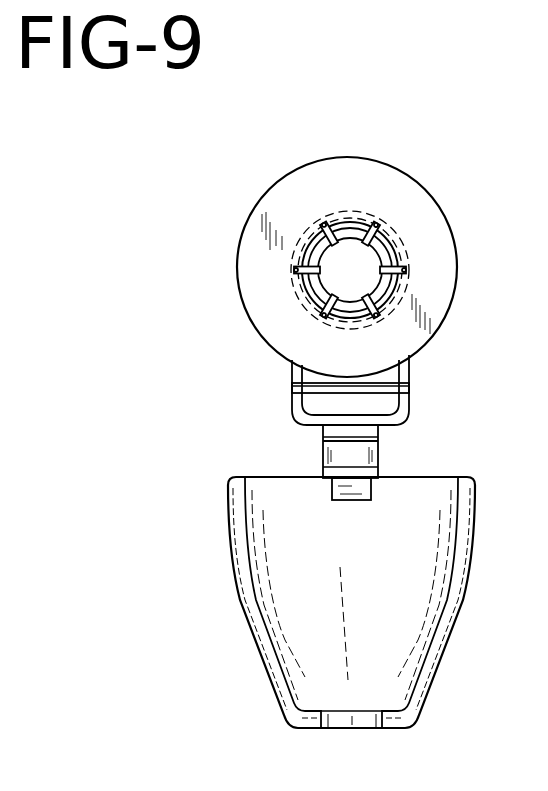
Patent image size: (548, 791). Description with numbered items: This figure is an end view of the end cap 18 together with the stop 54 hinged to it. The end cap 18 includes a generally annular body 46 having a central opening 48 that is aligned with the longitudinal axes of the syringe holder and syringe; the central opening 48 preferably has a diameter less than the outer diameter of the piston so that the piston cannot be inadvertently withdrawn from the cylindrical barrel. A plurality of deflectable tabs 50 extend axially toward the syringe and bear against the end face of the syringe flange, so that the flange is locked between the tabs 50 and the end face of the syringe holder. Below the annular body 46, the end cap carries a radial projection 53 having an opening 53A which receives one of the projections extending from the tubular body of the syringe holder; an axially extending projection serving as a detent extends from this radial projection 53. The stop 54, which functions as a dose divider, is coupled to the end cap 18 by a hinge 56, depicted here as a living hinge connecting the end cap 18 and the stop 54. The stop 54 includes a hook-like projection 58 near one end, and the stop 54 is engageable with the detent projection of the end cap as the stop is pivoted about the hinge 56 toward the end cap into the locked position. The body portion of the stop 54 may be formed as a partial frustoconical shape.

The end cap 18 is at (402, 146).
The annular body 46 is at (268, 307).
The central opening 48 is at (352, 265).
The deflectable tabs 50 is at (333, 222).
The radial projection 53 is at (292, 405).
The opening 53A is at (375, 399).
The hinge 56 is at (378, 440).
The hook-like projection 58 is at (350, 494).
The stop 54 is at (242, 677).